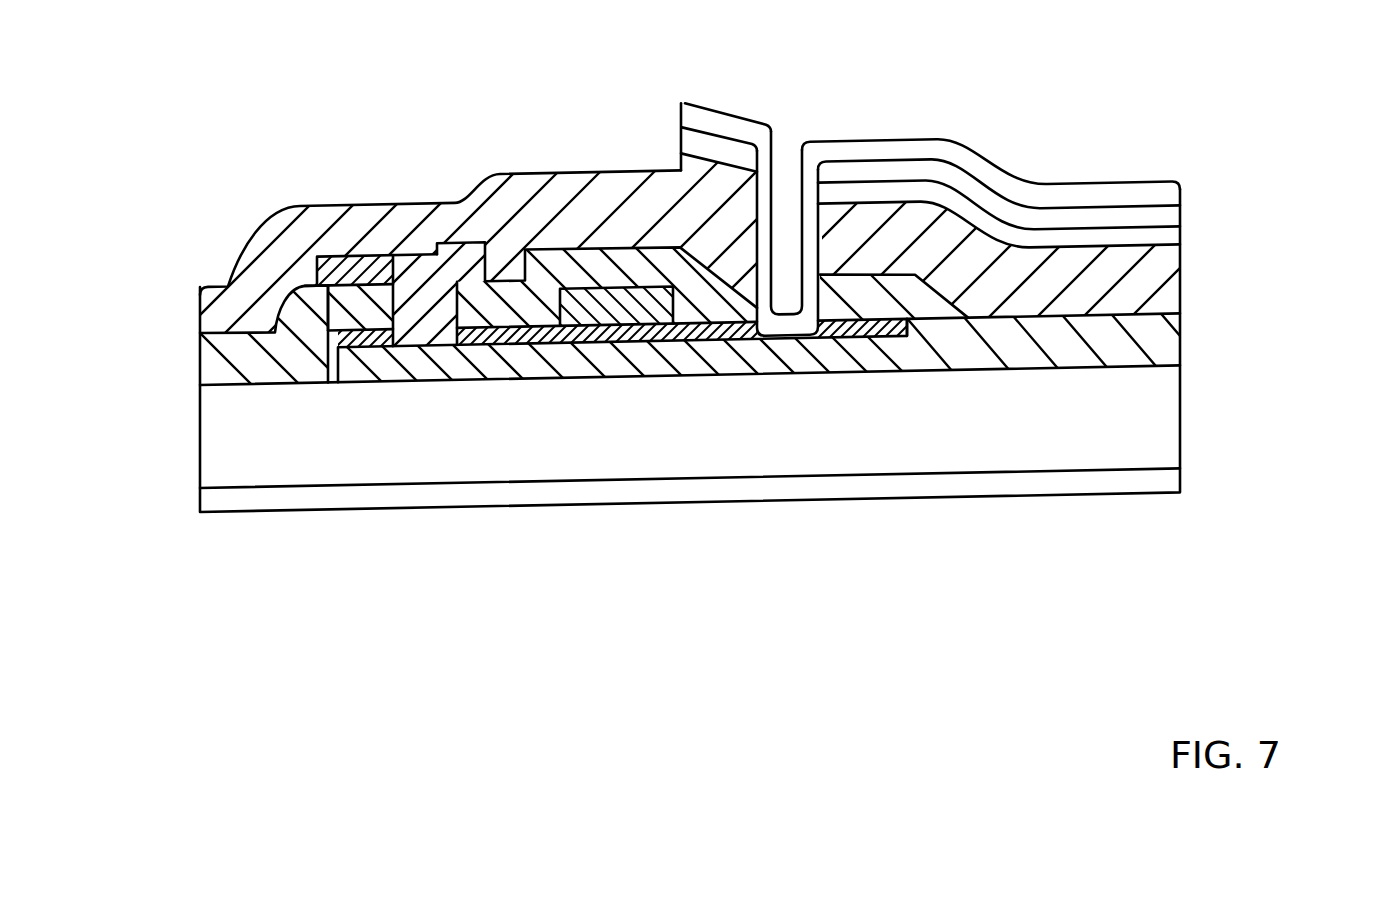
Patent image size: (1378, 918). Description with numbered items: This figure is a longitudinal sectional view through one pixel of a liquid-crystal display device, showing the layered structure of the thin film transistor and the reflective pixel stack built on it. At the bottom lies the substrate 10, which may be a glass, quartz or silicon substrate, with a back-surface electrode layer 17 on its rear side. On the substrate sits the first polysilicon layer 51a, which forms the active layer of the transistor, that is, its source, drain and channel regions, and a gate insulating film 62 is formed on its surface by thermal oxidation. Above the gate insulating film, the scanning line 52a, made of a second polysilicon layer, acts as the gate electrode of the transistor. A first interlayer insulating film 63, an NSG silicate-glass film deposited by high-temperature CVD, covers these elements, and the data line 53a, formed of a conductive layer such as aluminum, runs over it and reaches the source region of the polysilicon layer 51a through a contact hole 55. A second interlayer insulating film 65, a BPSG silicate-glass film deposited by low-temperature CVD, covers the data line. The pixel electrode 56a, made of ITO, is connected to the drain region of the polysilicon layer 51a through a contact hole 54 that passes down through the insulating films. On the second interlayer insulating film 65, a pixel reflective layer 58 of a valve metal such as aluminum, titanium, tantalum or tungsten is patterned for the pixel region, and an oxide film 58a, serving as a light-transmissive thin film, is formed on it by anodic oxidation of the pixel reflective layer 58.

The substrate 10 is at (233, 443).
The back-surface electrode layer 17 is at (993, 487).
The first polysilicon layer 51a is at (722, 355).
The gate insulating film 62 is at (543, 330).
The first interlayer insulating film 63 is at (280, 345).
The data line 53a is at (393, 253).
The contact hole 55 is at (457, 297).
The scanning line 52a is at (627, 303).
The second interlayer insulating film 65 is at (545, 197).
The contact hole 54 is at (792, 252).
The pixel electrode 56a is at (1010, 167).
The oxide film 58a is at (1177, 218).
The pixel reflective layer 58 is at (1177, 236).